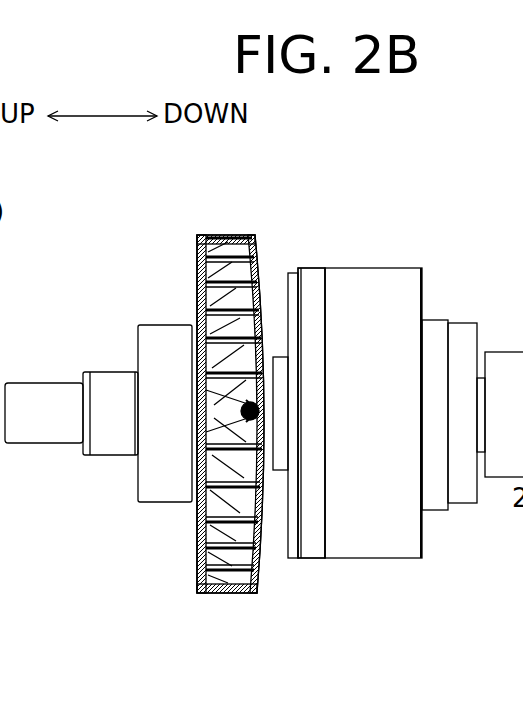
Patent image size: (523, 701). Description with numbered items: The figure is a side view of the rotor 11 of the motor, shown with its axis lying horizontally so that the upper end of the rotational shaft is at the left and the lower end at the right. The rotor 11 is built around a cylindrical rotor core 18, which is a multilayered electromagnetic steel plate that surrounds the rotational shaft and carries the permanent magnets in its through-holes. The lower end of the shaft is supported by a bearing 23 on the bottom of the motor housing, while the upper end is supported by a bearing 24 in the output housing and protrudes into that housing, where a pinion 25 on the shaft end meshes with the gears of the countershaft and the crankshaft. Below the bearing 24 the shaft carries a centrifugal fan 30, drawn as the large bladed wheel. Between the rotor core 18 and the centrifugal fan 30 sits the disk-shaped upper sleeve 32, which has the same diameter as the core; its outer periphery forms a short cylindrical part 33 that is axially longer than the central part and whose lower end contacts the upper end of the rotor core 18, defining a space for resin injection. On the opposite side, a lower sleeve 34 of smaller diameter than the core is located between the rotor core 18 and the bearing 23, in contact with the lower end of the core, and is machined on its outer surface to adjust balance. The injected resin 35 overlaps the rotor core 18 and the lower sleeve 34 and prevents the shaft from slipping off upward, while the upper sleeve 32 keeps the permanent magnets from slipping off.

The rotor 11 is at (177, 238).
The rotor core 18 is at (375, 262).
The bearing 23 is at (505, 362).
The bearing 24 is at (164, 325).
The pinion 25 is at (41, 385).
The centrifugal fan 30 is at (233, 236).
The upper sleeve 32 is at (311, 413).
The short cylindrical part 33 is at (309, 283).
The lower sleeve 34 is at (438, 318).
The resin 35 is at (290, 552).